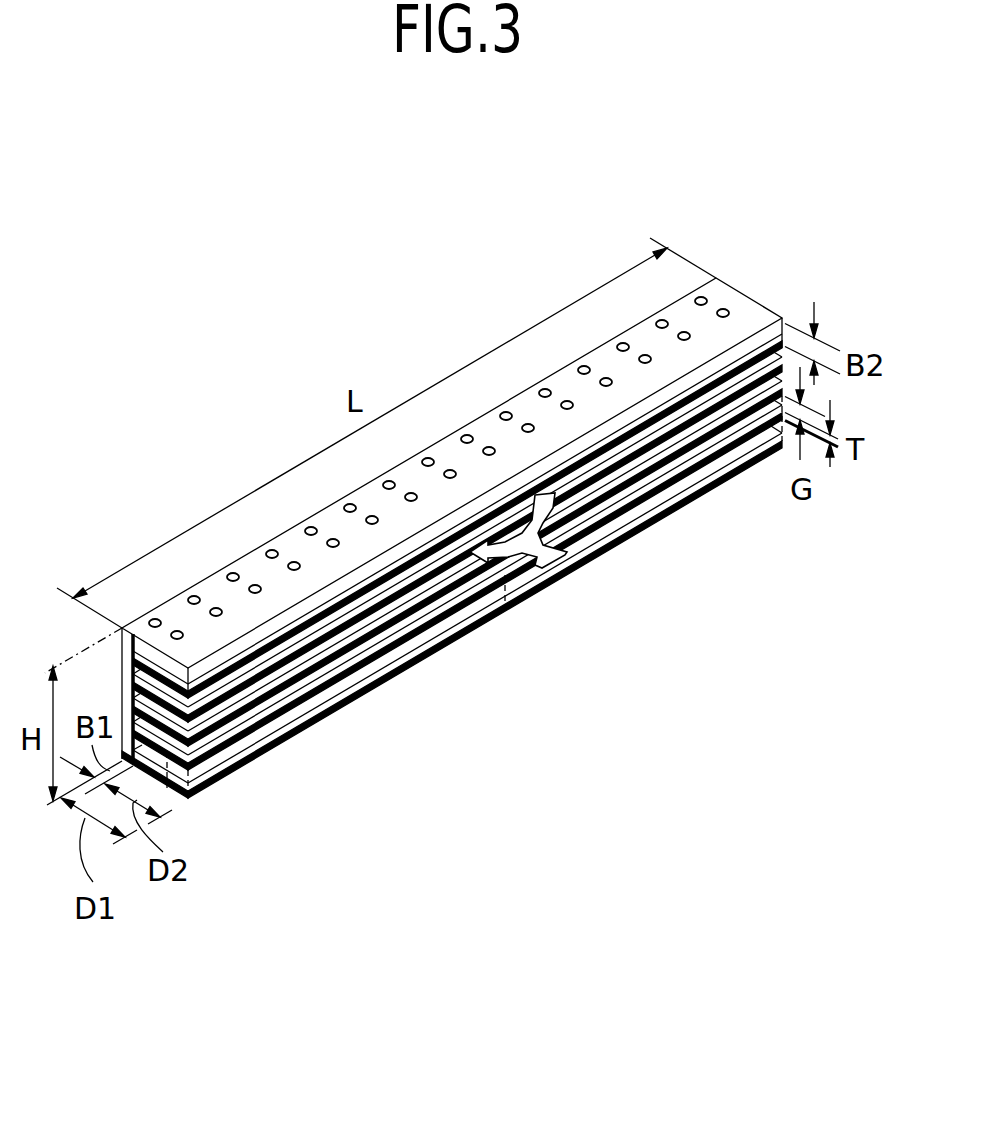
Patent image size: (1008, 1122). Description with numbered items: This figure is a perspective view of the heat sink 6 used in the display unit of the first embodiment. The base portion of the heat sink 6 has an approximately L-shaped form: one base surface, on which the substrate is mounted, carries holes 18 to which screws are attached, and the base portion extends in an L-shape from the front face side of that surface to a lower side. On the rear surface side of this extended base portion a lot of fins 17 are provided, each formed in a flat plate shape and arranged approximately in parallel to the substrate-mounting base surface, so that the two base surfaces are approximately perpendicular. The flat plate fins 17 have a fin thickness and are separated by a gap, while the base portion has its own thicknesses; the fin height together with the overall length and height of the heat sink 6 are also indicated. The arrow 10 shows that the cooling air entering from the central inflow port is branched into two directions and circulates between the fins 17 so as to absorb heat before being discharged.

The heat sink 6 is at (745, 312).
The fins 17 is at (655, 488).
The hole 18 is at (268, 549).
The arrow 10 is at (565, 557).